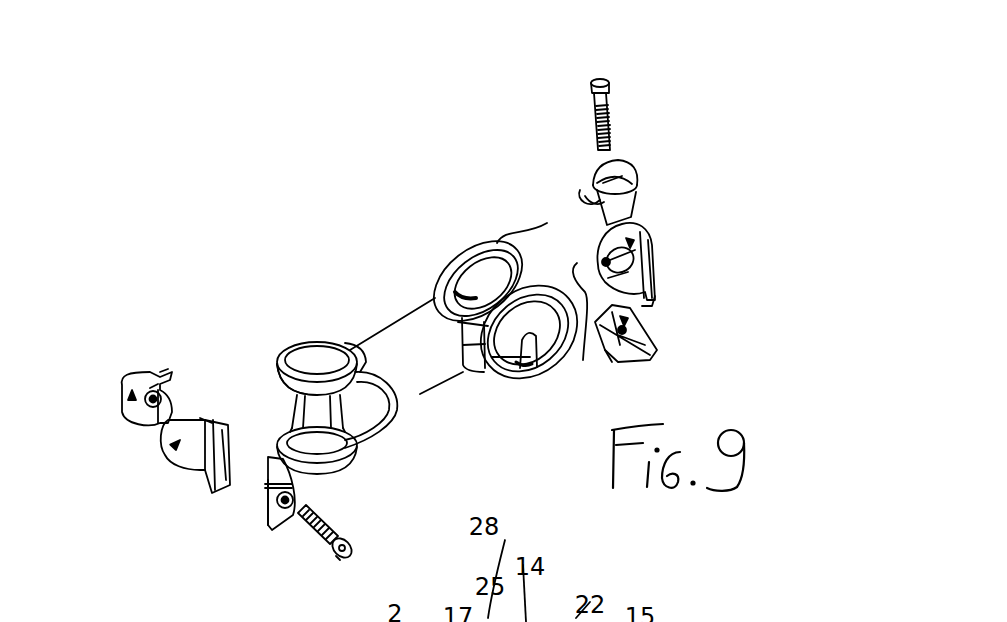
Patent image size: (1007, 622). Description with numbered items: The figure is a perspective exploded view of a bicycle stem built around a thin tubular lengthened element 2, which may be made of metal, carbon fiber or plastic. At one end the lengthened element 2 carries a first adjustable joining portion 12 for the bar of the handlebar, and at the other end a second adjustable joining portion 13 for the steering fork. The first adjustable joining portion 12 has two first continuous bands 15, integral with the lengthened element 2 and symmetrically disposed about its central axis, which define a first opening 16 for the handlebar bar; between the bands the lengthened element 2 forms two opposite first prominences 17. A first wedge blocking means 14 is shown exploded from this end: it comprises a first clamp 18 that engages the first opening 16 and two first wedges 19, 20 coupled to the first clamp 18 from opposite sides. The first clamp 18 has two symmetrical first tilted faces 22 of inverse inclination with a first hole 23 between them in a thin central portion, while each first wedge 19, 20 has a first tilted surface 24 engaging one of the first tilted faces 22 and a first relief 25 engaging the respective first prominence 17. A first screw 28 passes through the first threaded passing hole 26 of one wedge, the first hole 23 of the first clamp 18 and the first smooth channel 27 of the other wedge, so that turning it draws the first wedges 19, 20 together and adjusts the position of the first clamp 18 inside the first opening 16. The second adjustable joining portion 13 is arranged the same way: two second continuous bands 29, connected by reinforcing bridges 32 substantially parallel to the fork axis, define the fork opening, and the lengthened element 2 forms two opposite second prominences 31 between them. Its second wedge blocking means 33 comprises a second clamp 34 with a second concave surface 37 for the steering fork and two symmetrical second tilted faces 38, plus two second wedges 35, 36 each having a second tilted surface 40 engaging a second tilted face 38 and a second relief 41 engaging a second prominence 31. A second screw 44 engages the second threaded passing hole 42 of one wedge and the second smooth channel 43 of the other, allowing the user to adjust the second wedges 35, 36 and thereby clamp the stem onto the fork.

The lengthened element 2 is at (398, 342).
The first adjustable joining portion 12 is at (456, 215).
The second adjustable joining portion 13 is at (283, 330).
The first wedge blocking means 14 is at (660, 195).
The first continuous band 15 is at (549, 283).
The first opening 16 is at (532, 378).
The first prominence 17 is at (430, 293).
The first clamp 18 is at (650, 270).
The first wedge 19 is at (632, 322).
The first wedge 20 is at (595, 114).
The first tilted face 22 is at (640, 220).
The first hole 23 is at (581, 332).
The first tilted surface 24 is at (640, 170).
The first relief 25 is at (592, 170).
The first threaded passing hole 26 is at (614, 363).
The first smooth channel 27 is at (612, 178).
The first screw 28 is at (597, 82).
The second continuous band 29 is at (250, 343).
The second prominence 31 is at (393, 410).
The reinforcing bridge 32 is at (292, 403).
The second wedge blocking means 33 is at (158, 447).
The second clamp 34 is at (205, 420).
The second wedge 35 is at (160, 386).
The second wedge 36 is at (363, 536).
The second concave surface 37 is at (173, 447).
The second tilted face 38 is at (229, 490).
The second tilted surface 40 is at (132, 420).
The second relief 41 is at (282, 522).
The second threaded passing hole 42 is at (153, 373).
The second smooth channel 43 is at (340, 558).
The second screw 44 is at (348, 557).